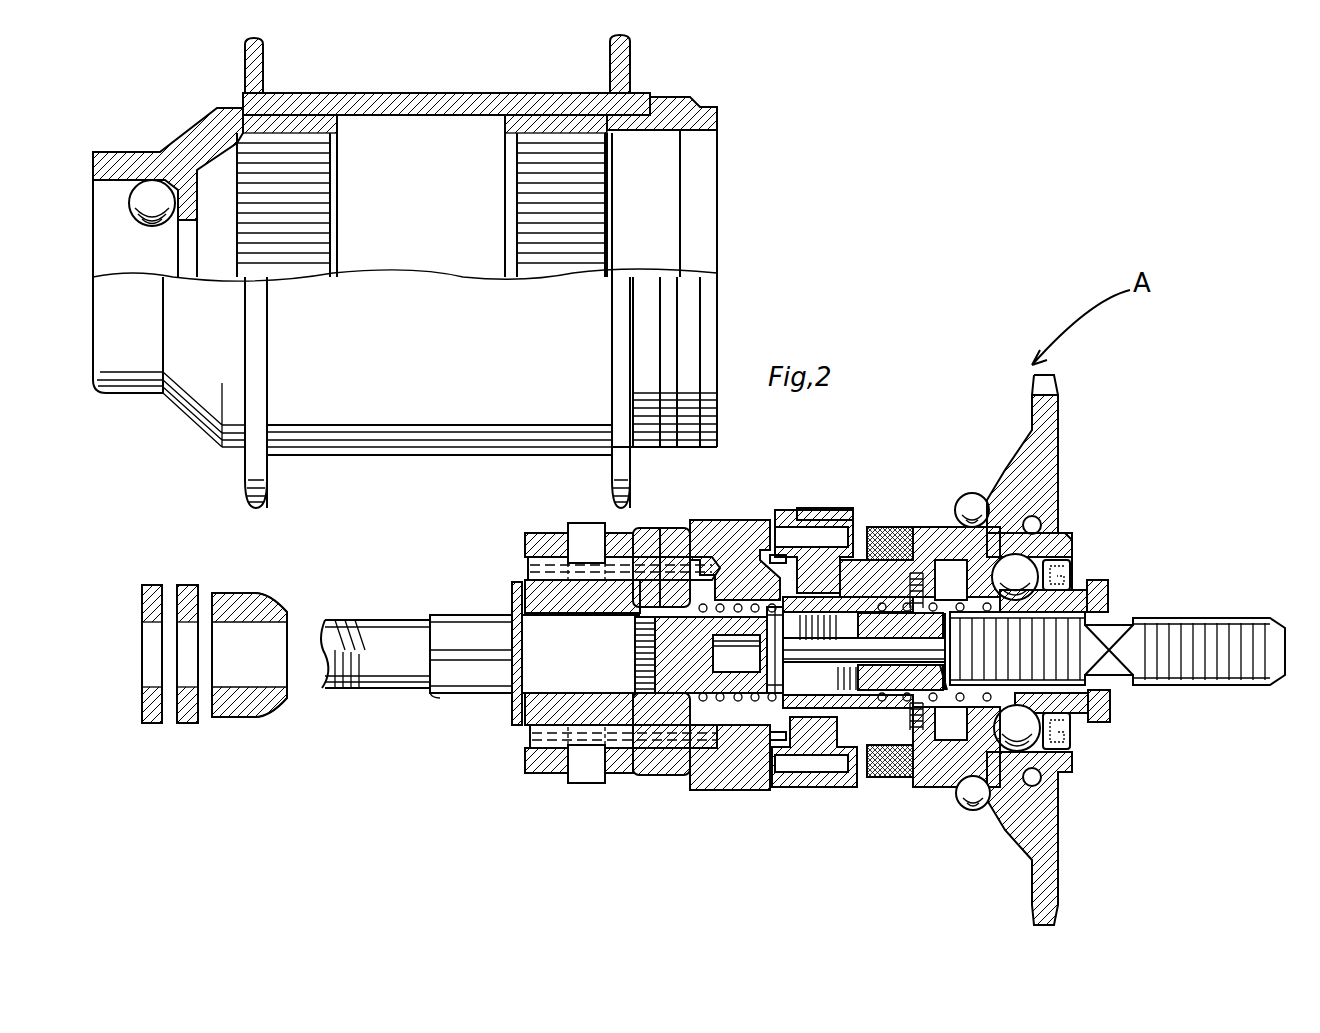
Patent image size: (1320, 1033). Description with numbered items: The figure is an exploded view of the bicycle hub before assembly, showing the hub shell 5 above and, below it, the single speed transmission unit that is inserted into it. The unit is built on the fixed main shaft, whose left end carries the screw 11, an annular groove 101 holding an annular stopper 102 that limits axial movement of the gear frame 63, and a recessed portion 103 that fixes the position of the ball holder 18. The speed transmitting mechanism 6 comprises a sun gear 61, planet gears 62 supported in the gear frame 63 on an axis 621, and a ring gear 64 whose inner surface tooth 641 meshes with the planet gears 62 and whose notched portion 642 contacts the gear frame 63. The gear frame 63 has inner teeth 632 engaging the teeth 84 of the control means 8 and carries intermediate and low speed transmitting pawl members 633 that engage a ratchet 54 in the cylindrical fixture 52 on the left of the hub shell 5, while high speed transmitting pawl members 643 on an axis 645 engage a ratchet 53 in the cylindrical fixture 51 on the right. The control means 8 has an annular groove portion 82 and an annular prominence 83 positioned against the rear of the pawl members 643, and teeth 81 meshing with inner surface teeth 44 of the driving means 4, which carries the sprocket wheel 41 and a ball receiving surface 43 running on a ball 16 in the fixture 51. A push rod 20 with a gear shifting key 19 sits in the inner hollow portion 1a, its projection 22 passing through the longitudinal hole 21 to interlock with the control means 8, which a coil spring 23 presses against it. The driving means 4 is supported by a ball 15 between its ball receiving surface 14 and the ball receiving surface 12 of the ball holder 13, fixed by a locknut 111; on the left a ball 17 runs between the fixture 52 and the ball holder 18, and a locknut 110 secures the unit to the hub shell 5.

The inner hollow portion 1a is at (952, 723).
The driving means 4 is at (1072, 540).
The hub shell 5 is at (416, 110).
The speed transmitting mechanism 6 is at (845, 538).
The control means 8 is at (940, 540).
The screw 11 is at (342, 628).
The ball receiving surface 12 is at (1100, 612).
The ball holder 13 is at (1133, 680).
The ball receiving surface 14 is at (1060, 558).
The ball 15 is at (1108, 583).
The ball 16 is at (1030, 500).
The ball 17 is at (148, 198).
The ball holder 18 is at (248, 595).
The gear shifting key 19 is at (770, 655).
The push rod 20 is at (893, 650).
The longitudinal hole 21 is at (847, 633).
The projection 22 is at (838, 680).
The coil spring 23 is at (1000, 800).
The sprocket wheel 41 is at (1052, 412).
The ball receiving surface 43 is at (1042, 524).
The inner surface teeth 44 is at (975, 495).
The cylindrical fixture 51 is at (680, 112).
The cylindrical fixture 52 is at (200, 140).
The ratchet 53 is at (550, 128).
The ratchet 54 is at (300, 128).
The sun gear 61 is at (690, 700).
The planet gears 62 is at (665, 540).
The gear frame 63 is at (720, 545).
The ring gear 64 is at (755, 528).
The teeth 81 is at (928, 770).
The annular groove portion 82 is at (820, 775).
The annular prominence 83 is at (788, 740).
The teeth 84 is at (740, 760).
The annular groove 101 is at (512, 622).
The annular stopper 102 is at (512, 597).
The recessed portion 103 is at (440, 698).
The locknut 110 is at (205, 582).
The locknut 111 is at (1100, 718).
The axis 621 is at (655, 530).
The inner teeth 632 is at (778, 550).
The intermediate and low speed transmitting pawl members 633 is at (580, 530).
The inner surface tooth 641 is at (720, 540).
The notched portion 642 is at (818, 520).
The high speed transmitting pawl members 643 is at (845, 520).
The axis 645 is at (915, 535).